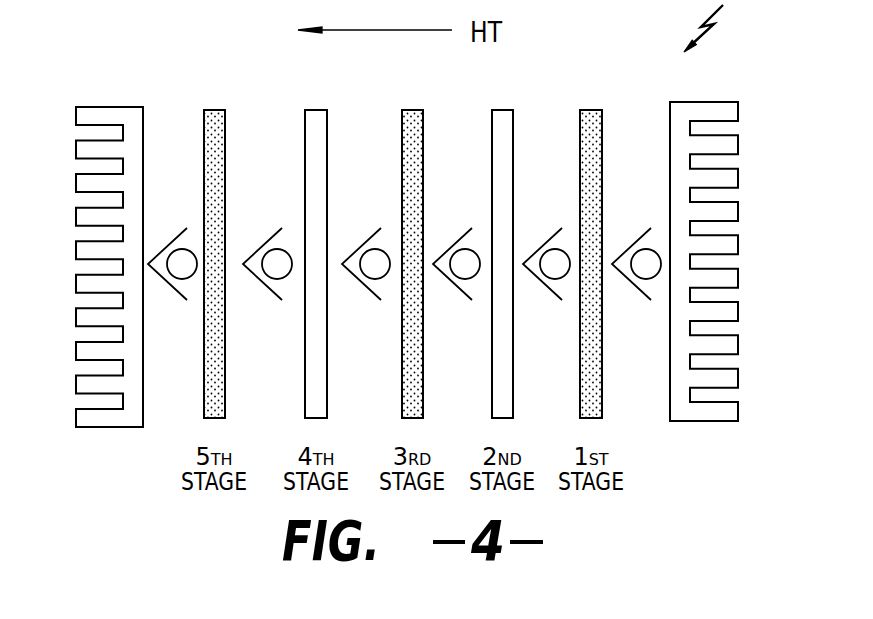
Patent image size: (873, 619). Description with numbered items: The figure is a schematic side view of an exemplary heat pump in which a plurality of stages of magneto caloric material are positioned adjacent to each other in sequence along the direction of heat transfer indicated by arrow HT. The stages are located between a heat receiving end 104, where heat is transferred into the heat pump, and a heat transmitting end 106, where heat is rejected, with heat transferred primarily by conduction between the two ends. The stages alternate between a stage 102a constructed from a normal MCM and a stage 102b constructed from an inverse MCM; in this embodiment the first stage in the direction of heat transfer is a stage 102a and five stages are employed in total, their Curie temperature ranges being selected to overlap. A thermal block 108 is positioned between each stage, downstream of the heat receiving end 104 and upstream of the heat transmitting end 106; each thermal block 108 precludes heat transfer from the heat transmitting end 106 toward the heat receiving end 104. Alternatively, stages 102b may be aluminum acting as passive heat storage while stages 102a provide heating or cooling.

The stage constructed from a normal MCM 102a is at (214, 112).
The stage constructed from an inverse MCM 102b is at (316, 112).
The heat receiving end 104 is at (693, 438).
The heat transmitting end 106 is at (108, 437).
The thermal block 108 is at (263, 228).